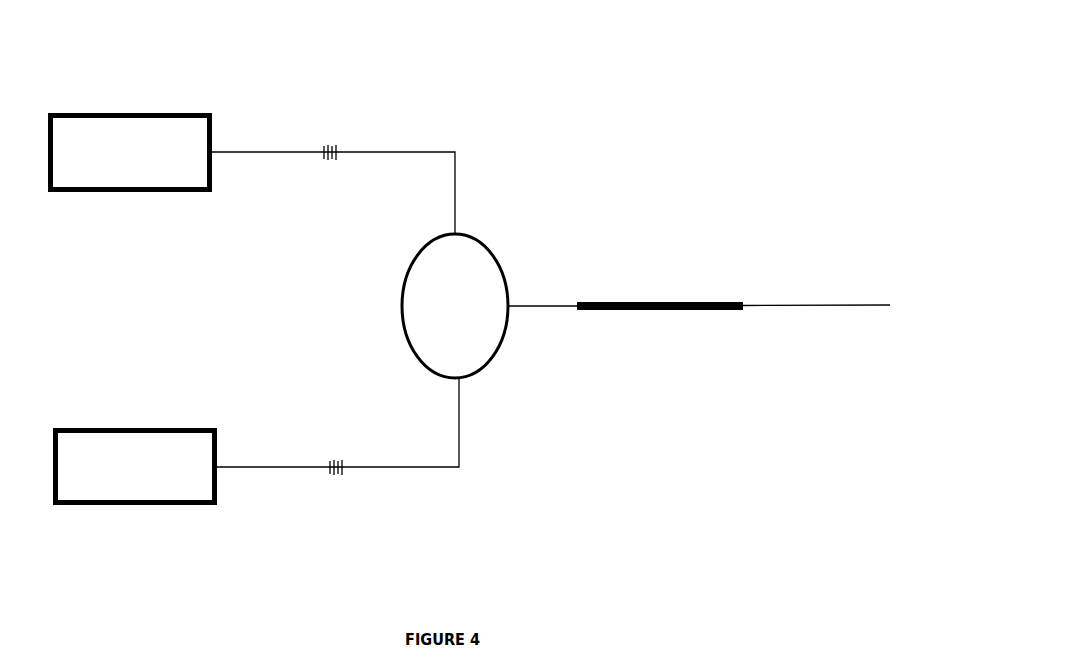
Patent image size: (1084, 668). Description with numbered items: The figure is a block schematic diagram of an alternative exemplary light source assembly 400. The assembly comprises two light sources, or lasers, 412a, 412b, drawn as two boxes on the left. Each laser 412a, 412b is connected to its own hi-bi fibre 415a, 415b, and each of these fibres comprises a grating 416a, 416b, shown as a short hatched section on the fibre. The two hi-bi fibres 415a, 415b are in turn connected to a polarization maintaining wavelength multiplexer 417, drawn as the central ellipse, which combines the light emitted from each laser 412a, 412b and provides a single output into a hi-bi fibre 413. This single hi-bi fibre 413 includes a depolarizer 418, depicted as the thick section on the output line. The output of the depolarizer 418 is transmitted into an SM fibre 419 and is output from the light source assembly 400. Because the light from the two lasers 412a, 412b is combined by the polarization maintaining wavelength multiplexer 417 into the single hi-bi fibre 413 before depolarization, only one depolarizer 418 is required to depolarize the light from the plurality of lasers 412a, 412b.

The light source assembly 400 is at (535, 109).
The light source 412a is at (93, 195).
The light source 412b is at (98, 508).
The hi-bi fibre 413 is at (540, 303).
The hi-bi fibre 415a is at (275, 153).
The hi-bi fibre 415b is at (282, 468).
The grating 416a is at (330, 142).
The grating 416b is at (347, 480).
The polarization maintaining wavelength multiplexer 417 is at (480, 373).
The depolarizer 418 is at (643, 310).
The SM fibre 419 is at (827, 302).